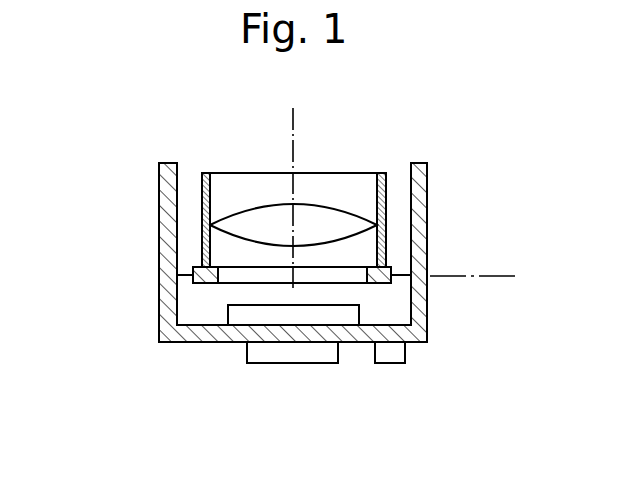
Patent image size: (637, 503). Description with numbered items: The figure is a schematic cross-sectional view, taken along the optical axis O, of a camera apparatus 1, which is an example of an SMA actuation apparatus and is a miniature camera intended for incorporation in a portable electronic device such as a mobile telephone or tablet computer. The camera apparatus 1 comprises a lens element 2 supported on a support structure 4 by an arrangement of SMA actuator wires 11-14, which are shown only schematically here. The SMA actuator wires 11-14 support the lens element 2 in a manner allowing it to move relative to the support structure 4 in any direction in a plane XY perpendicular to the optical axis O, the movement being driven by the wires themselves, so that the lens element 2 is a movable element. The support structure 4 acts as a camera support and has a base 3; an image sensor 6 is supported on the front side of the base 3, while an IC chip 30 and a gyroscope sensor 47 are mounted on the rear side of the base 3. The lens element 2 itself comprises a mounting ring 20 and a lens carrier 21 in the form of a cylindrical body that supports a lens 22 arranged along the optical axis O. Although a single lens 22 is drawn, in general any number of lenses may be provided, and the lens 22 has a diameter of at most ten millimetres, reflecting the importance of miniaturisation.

The camera apparatus 1 is at (138, 226).
The lens element 2 is at (365, 176).
The base 3 is at (353, 325).
The support structure 4 is at (421, 310).
The image sensor 6 is at (234, 320).
The SMA actuator wires 11-14 is at (402, 276).
The mounting ring 20 is at (202, 283).
The lens carrier 21 is at (196, 177).
The lens 22 is at (263, 217).
The IC chip 30 is at (285, 353).
The gyroscope sensor 47 is at (393, 358).
The optical axis O is at (293, 120).
The plane XY is at (490, 275).